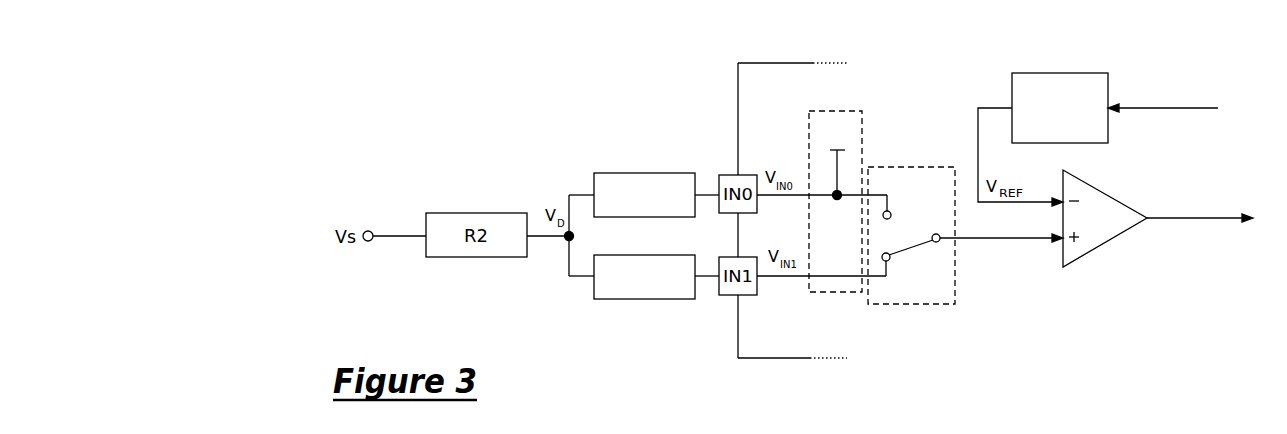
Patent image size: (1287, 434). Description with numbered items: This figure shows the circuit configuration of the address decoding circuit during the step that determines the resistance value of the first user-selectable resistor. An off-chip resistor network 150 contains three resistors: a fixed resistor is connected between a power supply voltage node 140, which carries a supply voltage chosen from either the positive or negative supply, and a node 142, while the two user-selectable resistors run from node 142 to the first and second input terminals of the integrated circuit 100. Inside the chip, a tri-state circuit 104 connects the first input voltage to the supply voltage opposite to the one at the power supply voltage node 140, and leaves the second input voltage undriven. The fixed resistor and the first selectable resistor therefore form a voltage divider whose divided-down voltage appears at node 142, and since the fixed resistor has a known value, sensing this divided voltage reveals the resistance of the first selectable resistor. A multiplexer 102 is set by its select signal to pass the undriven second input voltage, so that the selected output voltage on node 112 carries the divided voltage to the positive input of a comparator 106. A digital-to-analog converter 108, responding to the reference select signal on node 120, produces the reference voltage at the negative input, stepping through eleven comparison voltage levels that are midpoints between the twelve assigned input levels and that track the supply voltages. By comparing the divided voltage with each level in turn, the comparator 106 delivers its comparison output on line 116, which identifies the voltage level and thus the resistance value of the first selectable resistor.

The integrated circuit 100 is at (770, 63).
The multiplexer 102 is at (893, 304).
The tri-state circuit 104 is at (855, 110).
The comparator 106 is at (1082, 258).
The digital-to-analog converter 108 is at (1073, 73).
The node 112 is at (1028, 238).
The comparator output 116 is at (1188, 218).
The node 120 is at (1180, 110).
The power supply voltage node 140 is at (372, 232).
The node 142 is at (565, 240).
The resistor network 150 is at (707, 160).